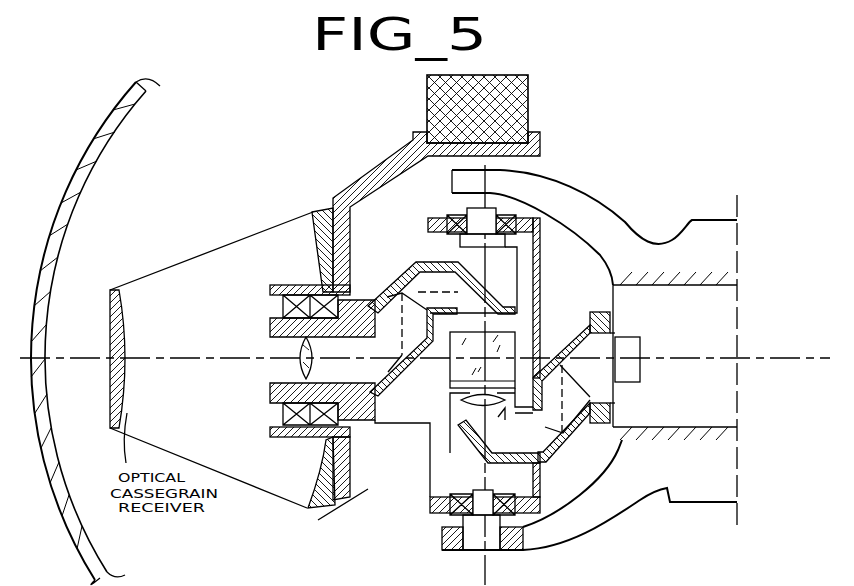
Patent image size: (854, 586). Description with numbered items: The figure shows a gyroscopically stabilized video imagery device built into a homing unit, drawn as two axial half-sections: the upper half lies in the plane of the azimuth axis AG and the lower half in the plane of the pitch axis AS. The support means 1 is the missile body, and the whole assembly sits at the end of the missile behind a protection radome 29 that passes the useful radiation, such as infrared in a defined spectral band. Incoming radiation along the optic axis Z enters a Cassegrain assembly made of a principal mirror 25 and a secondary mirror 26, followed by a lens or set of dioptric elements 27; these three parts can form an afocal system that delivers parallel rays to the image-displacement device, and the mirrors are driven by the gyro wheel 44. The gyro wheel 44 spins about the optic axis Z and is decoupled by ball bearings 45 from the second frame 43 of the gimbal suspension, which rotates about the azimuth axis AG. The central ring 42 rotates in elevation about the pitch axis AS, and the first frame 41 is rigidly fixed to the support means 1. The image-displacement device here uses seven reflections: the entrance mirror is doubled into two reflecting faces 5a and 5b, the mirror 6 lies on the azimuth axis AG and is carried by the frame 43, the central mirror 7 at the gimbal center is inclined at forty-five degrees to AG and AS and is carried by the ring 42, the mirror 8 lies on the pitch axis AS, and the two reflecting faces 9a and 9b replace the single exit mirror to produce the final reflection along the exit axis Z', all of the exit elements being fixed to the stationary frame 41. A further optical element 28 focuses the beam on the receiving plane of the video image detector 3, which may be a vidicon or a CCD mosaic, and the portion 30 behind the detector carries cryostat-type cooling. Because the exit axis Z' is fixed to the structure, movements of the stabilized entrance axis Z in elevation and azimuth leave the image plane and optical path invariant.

The support means 1 is at (713, 225).
The video image detector 3 is at (642, 312).
The lens 5a is at (318, 358).
The optical tube 5b is at (408, 266).
The mirror 6 is at (498, 308).
The central mirror 7 is at (460, 365).
The mirror 8 is at (486, 462).
The reflecting face 9a is at (550, 458).
The reflecting face 9b is at (545, 342).
The principal mirror 25 is at (322, 258).
The secondary mirror 26 is at (124, 345).
The lens or set of dioptric elements 27 is at (290, 365).
The optical element 28 is at (462, 400).
The protection radome 29 is at (100, 160).
The cooled portion 30 is at (707, 400).
The first frame 41 is at (547, 535).
The ring 42 is at (432, 468).
The second frame 43 is at (377, 282).
The gyro wheel 44 is at (503, 95).
The ball bearings 45 is at (283, 412).
The azimuth axis AG is at (503, 172).
The pitch axis AS is at (485, 575).
The optic axis Z is at (425, 342).
The exit axis Z' is at (758, 362).